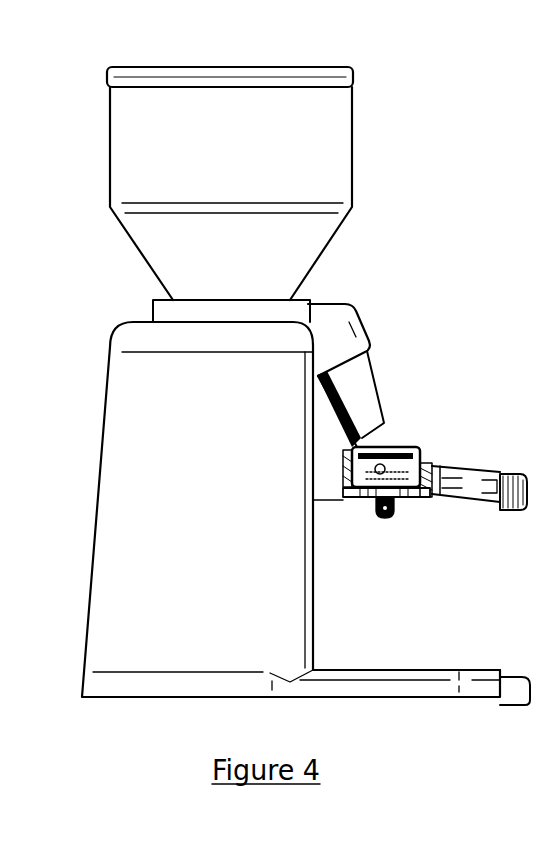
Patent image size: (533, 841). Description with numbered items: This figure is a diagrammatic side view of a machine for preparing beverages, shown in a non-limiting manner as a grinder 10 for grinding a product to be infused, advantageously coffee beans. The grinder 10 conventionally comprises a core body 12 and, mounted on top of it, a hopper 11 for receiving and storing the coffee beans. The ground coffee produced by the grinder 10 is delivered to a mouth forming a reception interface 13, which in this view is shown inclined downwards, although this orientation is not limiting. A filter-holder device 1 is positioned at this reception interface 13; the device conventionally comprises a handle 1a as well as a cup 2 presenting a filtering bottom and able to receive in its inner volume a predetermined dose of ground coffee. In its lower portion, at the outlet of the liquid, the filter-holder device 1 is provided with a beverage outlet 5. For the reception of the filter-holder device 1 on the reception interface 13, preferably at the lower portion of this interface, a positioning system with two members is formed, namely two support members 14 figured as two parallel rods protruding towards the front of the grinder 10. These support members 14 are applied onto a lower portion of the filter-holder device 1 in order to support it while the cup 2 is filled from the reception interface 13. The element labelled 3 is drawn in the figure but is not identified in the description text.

The filter-holder device 1 is at (430, 463).
The handle 1a is at (467, 502).
The cup 2 is at (413, 450).
The fork holder 3 is at (360, 447).
The beverage outlet 5 is at (388, 520).
The grinder 10 is at (150, 300).
The hopper 11 is at (330, 146).
The core body 12 is at (153, 543).
The reception interface 13 is at (350, 390).
The support members 14 is at (357, 500).